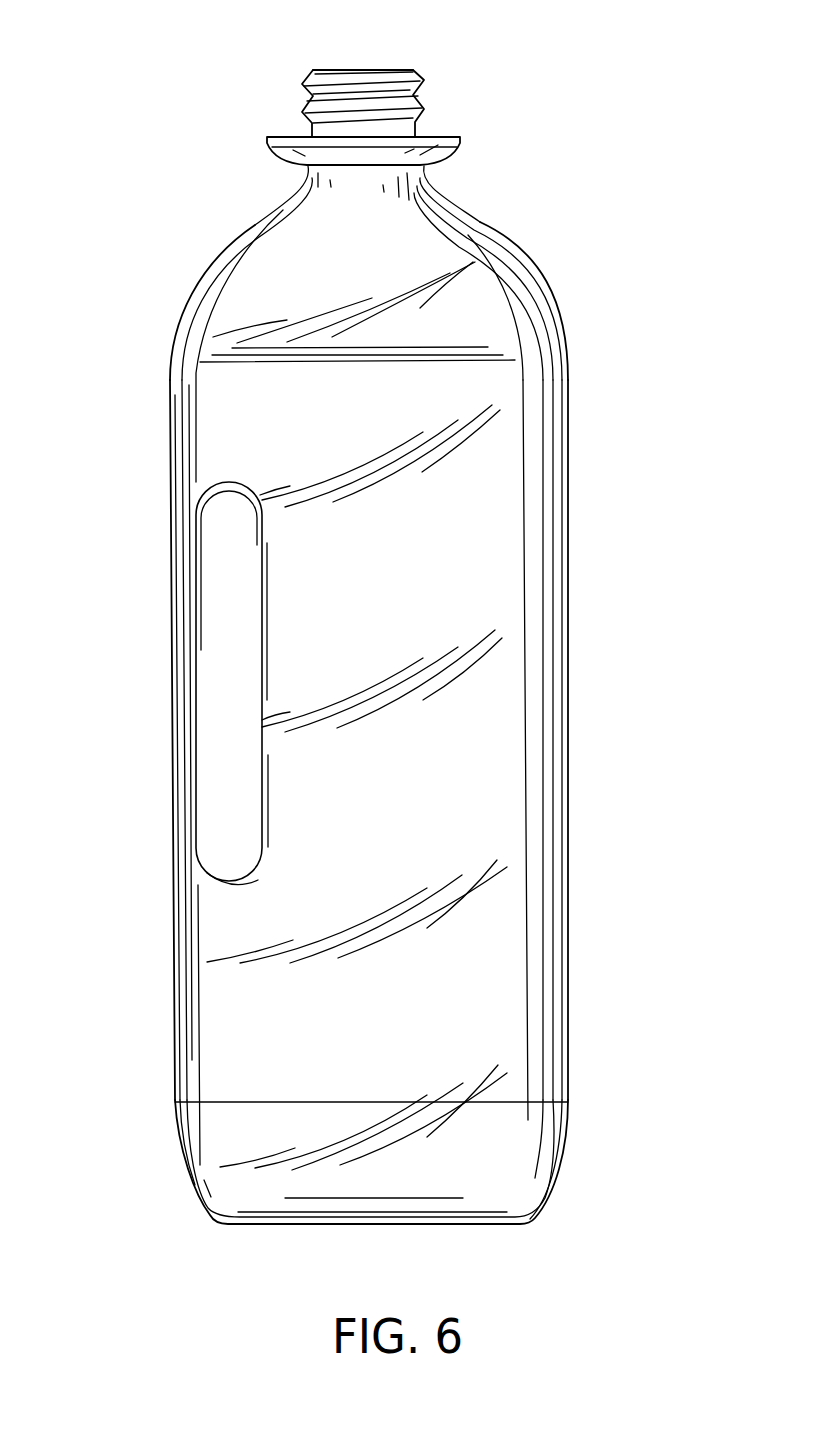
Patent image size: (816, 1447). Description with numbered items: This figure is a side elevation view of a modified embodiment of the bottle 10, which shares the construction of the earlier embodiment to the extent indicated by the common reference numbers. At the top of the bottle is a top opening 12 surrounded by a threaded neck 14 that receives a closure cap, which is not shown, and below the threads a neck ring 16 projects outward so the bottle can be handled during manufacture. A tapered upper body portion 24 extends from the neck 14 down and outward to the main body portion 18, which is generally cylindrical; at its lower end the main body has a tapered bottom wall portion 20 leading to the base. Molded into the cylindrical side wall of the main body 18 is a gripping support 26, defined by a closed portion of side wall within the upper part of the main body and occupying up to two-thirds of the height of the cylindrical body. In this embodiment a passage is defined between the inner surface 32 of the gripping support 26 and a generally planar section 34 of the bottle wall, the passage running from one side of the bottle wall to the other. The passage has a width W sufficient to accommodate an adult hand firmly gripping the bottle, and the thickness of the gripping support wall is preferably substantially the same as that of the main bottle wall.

The container 10 is at (614, 150).
The top opening 12 is at (410, 72).
The threaded neck 14 is at (418, 111).
The neck ring 16 is at (460, 138).
The main body portion 18 is at (595, 368).
The tapered bottom wall portion 20 is at (563, 1152).
The tapered upper body portion 24 is at (540, 274).
The gripping support 26 is at (168, 493).
The inner surface of the gripping support 32 is at (243, 567).
The generally planar section of the bottle wall 34 is at (260, 605).
The width of the passage W is at (220, 767).